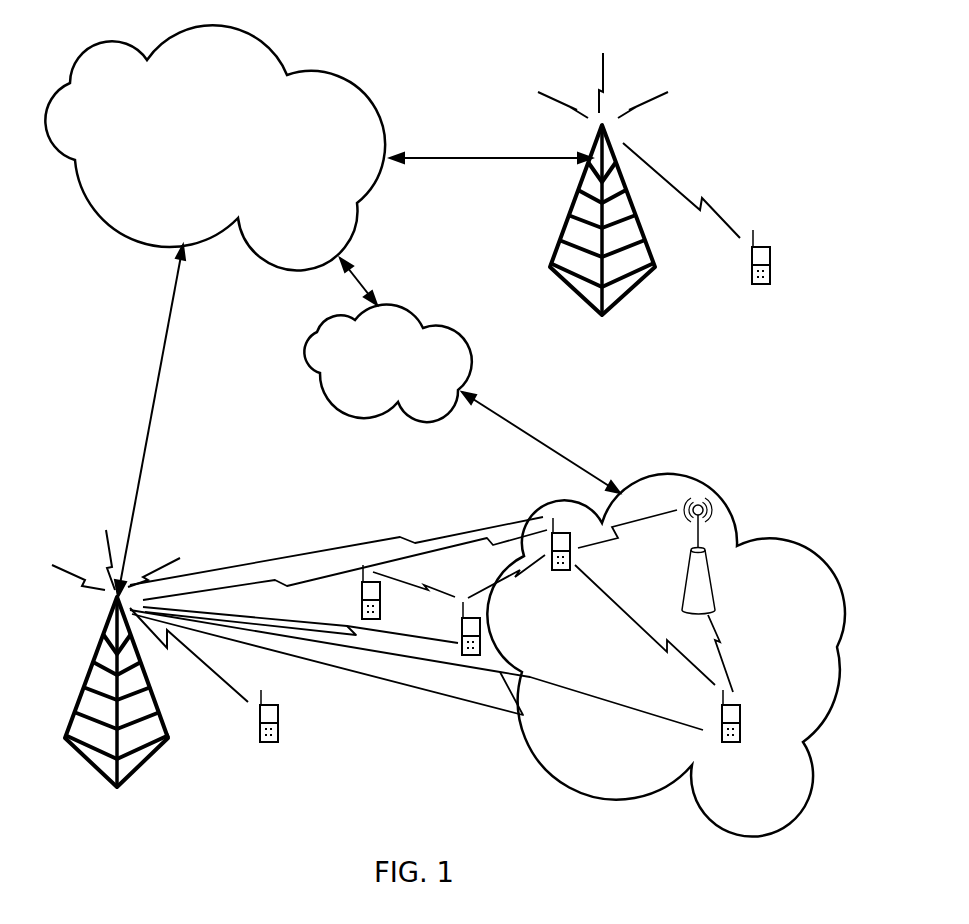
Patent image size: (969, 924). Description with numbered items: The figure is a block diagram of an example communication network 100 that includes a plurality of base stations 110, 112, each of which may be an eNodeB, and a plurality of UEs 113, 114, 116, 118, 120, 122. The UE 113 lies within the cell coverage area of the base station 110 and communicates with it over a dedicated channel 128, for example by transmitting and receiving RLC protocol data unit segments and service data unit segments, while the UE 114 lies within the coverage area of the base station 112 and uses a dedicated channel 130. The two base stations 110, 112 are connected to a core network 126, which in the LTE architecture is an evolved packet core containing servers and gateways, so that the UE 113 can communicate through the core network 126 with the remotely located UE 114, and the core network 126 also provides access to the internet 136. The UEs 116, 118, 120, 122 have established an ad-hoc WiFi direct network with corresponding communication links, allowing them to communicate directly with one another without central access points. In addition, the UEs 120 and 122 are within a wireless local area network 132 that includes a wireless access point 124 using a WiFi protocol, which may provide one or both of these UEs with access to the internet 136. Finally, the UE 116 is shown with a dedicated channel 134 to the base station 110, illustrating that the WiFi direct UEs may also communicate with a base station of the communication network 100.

The communication network 100 is at (678, 55).
The base station 110 is at (102, 638).
The base station 112 is at (570, 210).
The UE 113 is at (258, 730).
The UE 114 is at (771, 277).
The UE 116 is at (362, 607).
The UE 118 is at (460, 643).
The UE 120 is at (560, 572).
The UE 122 is at (743, 735).
The wireless access point 124 is at (713, 577).
The core network 126 is at (388, 128).
The dedicated channel 128 is at (225, 685).
The dedicated channel 130 is at (664, 175).
The wireless local area network 132 is at (642, 476).
The dedicated channel 134 is at (228, 590).
The internet 136 is at (473, 348).